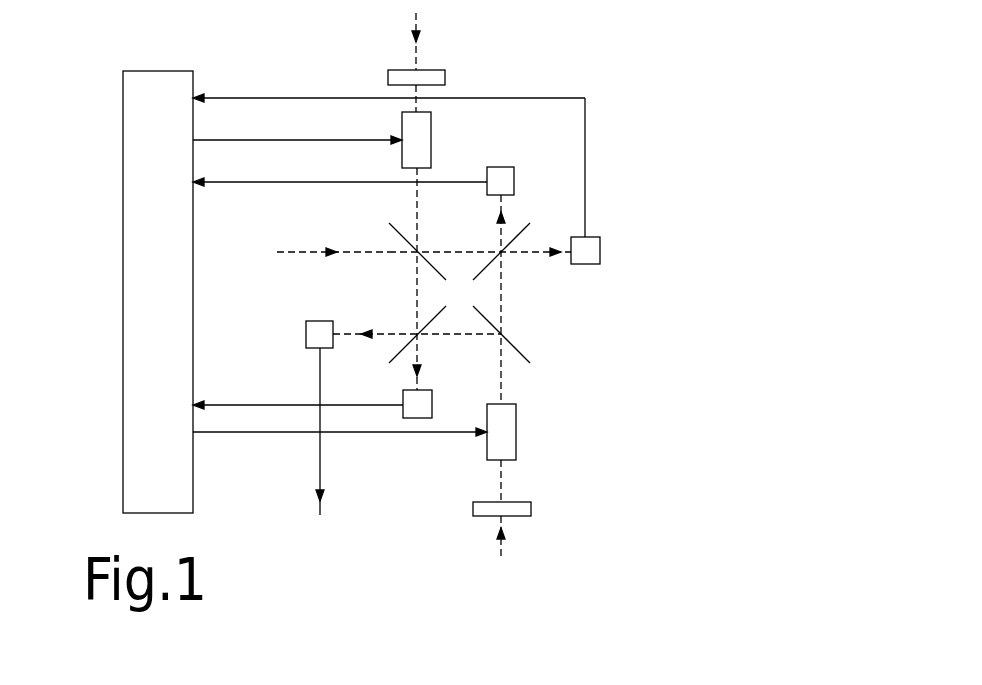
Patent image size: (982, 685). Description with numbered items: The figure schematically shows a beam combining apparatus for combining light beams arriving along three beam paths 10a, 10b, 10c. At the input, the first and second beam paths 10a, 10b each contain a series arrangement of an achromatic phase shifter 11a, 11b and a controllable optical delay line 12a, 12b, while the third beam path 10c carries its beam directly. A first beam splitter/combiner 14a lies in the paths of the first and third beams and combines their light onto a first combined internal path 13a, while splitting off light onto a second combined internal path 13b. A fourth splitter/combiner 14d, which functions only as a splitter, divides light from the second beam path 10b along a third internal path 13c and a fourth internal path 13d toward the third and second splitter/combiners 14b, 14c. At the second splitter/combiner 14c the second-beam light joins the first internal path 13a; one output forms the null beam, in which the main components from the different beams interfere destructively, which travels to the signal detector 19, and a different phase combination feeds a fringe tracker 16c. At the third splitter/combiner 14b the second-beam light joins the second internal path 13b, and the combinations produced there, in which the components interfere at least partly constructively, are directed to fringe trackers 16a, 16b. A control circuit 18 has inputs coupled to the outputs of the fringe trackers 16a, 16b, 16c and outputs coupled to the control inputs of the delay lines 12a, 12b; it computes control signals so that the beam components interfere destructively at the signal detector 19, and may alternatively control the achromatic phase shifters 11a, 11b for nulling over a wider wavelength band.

The first beam path 10a is at (417, 58).
The second beam path 10b is at (503, 550).
The third beam path 10c is at (283, 252).
The achromatic phase shifter 11a is at (445, 75).
The achromatic phase shifter 11b is at (531, 507).
The controllable optical delay line 12a is at (431, 144).
The controllable optical delay line 12b is at (516, 420).
The first combined internal path 13a is at (418, 293).
The second combined internal path 13b is at (455, 251).
The third internal path 13c is at (502, 282).
The fourth internal path 13d is at (465, 335).
The first beam splitter/combiner 14a is at (402, 236).
The third beam splitter/combiner 14b is at (524, 229).
The second beam splitter/combiner 14c is at (390, 362).
The fourth beam splitter/combiner 14d is at (520, 353).
The fringe tracker 16a is at (500, 167).
The fringe tracker 16b is at (600, 243).
The fringe tracker 16c is at (432, 406).
The control circuit 18 is at (123, 195).
The signal detector 19 is at (306, 333).